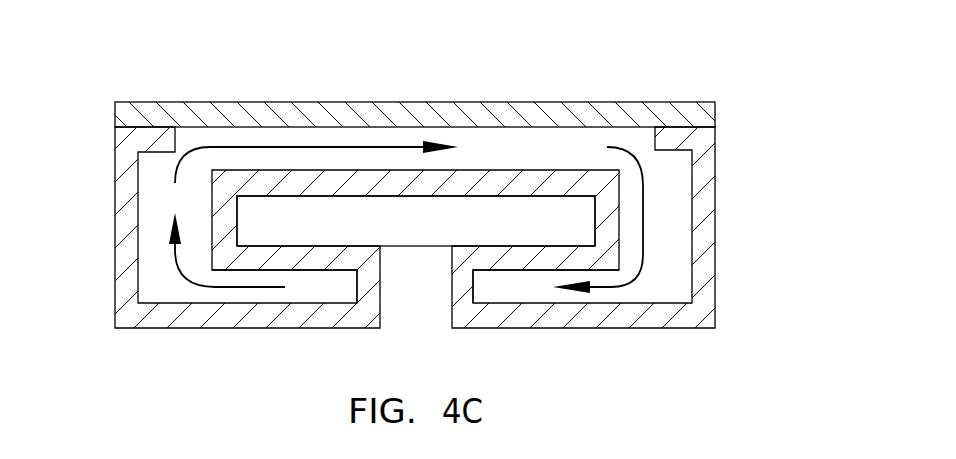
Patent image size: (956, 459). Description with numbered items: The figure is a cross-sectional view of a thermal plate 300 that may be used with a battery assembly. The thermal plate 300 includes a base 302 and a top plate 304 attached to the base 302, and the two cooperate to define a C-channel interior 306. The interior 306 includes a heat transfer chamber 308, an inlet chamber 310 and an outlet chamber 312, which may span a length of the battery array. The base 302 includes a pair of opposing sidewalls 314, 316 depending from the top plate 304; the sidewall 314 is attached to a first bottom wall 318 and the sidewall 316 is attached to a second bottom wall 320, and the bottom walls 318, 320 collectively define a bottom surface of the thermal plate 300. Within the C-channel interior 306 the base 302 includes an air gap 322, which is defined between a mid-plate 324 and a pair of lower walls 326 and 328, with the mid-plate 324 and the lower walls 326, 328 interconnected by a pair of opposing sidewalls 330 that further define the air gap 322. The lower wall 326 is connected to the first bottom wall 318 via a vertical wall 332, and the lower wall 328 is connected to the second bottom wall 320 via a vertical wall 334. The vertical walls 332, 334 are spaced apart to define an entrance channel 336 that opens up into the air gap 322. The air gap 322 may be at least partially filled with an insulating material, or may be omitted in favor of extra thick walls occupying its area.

The thermal plate 300 is at (766, 111).
The base 302 is at (125, 265).
The top plate 304 is at (295, 105).
The C-channel interior 306 is at (568, 146).
The heat transfer chamber 308 is at (527, 163).
The inlet chamber 310 is at (348, 298).
The outlet chamber 312 is at (529, 298).
The sidewall 314 is at (125, 193).
The sidewall 316 is at (703, 185).
The first bottom wall 318 is at (168, 317).
The second bottom wall 320 is at (663, 317).
The air gap 322 is at (432, 233).
The mid-plate 324 is at (267, 185).
The lower wall 326 is at (265, 258).
The lower wall 328 is at (538, 258).
The sidewalls 330 is at (620, 230).
The vertical wall 332 is at (370, 285).
The vertical wall 334 is at (458, 296).
The entrance channel 336 is at (450, 348).